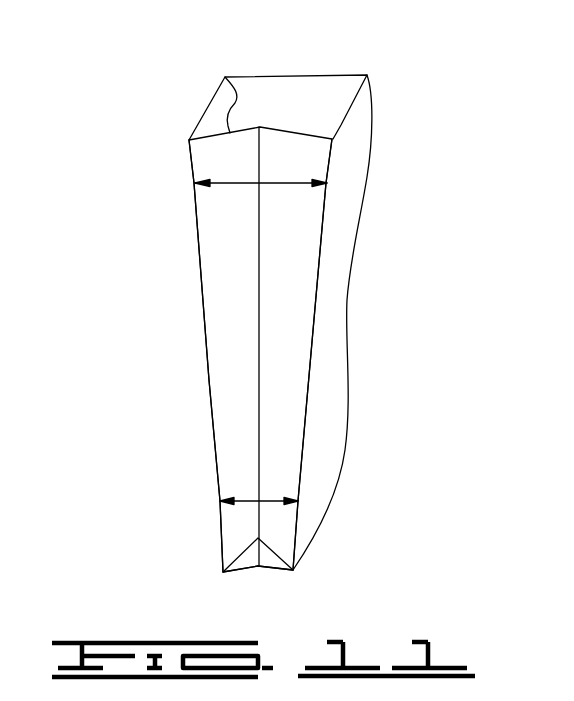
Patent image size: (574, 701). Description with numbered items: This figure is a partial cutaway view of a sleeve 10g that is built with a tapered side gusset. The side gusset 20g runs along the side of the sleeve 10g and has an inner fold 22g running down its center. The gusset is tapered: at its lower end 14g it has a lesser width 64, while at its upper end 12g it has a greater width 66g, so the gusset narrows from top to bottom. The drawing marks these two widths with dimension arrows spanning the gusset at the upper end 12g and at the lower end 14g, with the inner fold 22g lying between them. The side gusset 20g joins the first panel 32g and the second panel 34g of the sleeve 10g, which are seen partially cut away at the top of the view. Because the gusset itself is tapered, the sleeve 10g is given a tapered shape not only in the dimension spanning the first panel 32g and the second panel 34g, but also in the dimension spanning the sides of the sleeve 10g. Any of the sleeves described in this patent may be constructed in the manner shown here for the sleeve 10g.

The sleeve 10g is at (172, 370).
The upper end 12g is at (247, 122).
The lower end 14g is at (270, 570).
The side gusset 20g is at (200, 267).
The inner fold 22g is at (261, 355).
The first panel 32g is at (331, 307).
The second panel 34g is at (205, 113).
The lesser width 64 is at (260, 500).
The greater width 66g is at (273, 184).